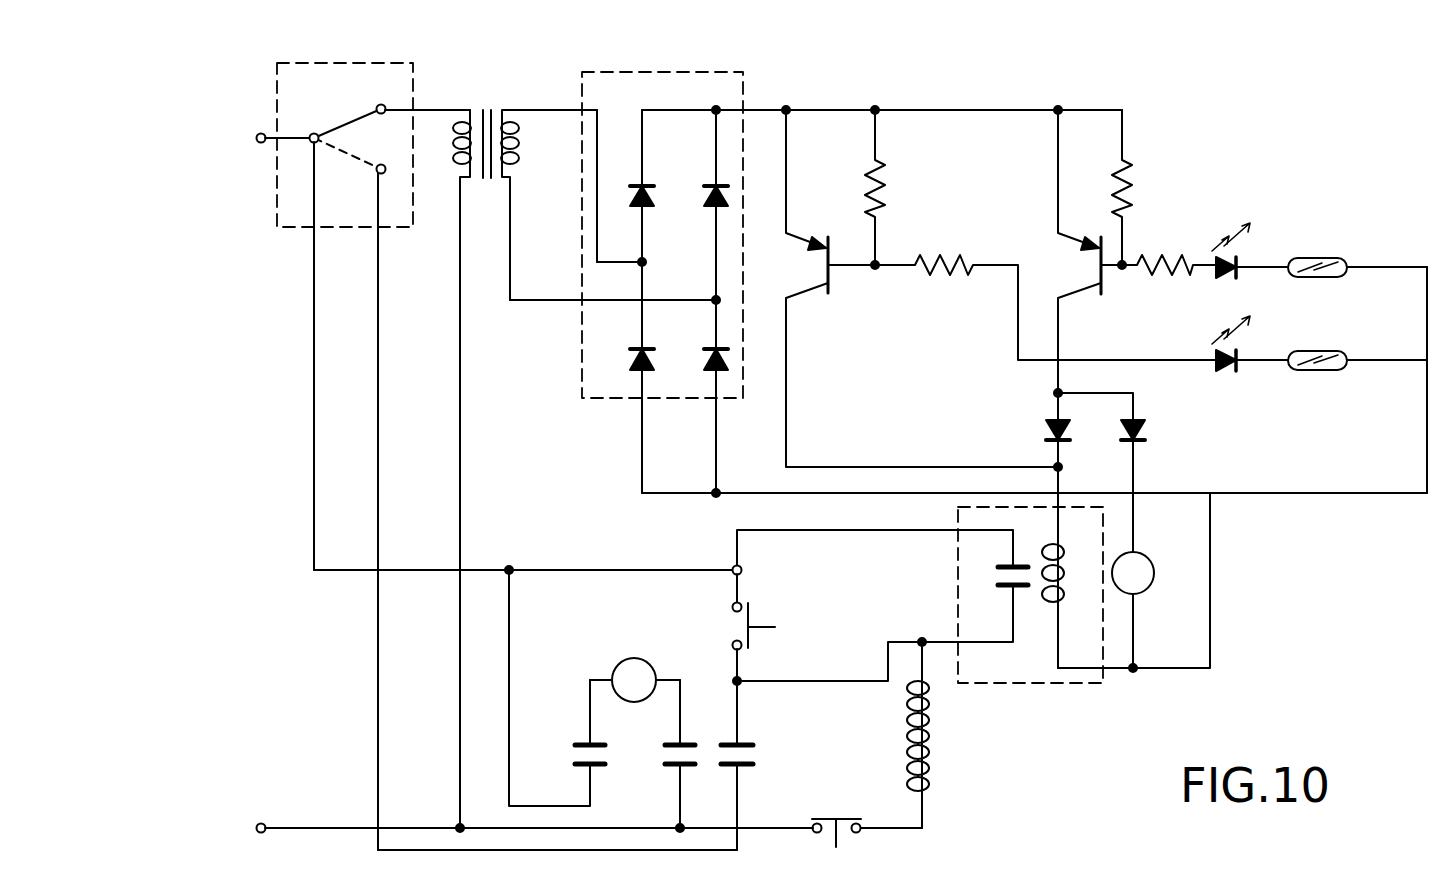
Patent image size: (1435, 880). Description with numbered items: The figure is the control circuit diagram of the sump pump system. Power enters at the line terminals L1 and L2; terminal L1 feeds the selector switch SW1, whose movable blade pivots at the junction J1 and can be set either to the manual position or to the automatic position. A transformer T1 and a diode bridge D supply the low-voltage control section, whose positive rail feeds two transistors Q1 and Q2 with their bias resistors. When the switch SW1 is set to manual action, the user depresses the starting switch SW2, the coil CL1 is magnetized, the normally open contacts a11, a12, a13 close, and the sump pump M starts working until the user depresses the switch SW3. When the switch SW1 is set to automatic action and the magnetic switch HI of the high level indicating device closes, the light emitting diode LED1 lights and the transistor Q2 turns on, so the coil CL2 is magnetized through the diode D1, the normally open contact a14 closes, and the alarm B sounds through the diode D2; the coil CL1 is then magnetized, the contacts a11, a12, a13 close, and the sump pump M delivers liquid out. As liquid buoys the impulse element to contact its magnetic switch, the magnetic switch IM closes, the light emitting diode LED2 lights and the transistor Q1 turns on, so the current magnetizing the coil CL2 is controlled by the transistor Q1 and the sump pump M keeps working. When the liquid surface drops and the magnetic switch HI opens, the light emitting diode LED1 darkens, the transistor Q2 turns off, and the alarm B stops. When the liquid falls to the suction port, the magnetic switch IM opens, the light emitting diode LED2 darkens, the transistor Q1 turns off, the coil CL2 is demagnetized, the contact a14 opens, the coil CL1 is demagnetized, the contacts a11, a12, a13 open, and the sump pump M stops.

The switch SW1 is at (507, 440).
The line terminal 1 L1 is at (268, 140).
The line terminal 2 L2 is at (515, 829).
The switch pivot junction J1 is at (513, 352).
The transformer T1 is at (584, 449).
The diode bridge rectifier D is at (723, 90).
The transistor Q1 is at (1001, 288).
The transistor Q2 is at (1137, 323).
The LED LED1 is at (1243, 269).
The LED LED2 is at (1243, 362).
The magnetic switch HI is at (1357, 375).
The magnetic switch IM is at (1357, 378).
The diode D1 is at (1037, 430).
The diode D2 is at (1122, 472).
The normally open contact a14 is at (920, 595).
The coil CL2 is at (1126, 582).
The alarm B is at (1133, 610).
The starting switch SW2 is at (640, 626).
The sump pump M is at (635, 680).
The normally open contact a11 is at (557, 688).
The normally open contact a12 is at (661, 756).
The normally open contact a13 is at (764, 765).
The coil CL1 is at (921, 733).
The switch SW3 is at (836, 816).